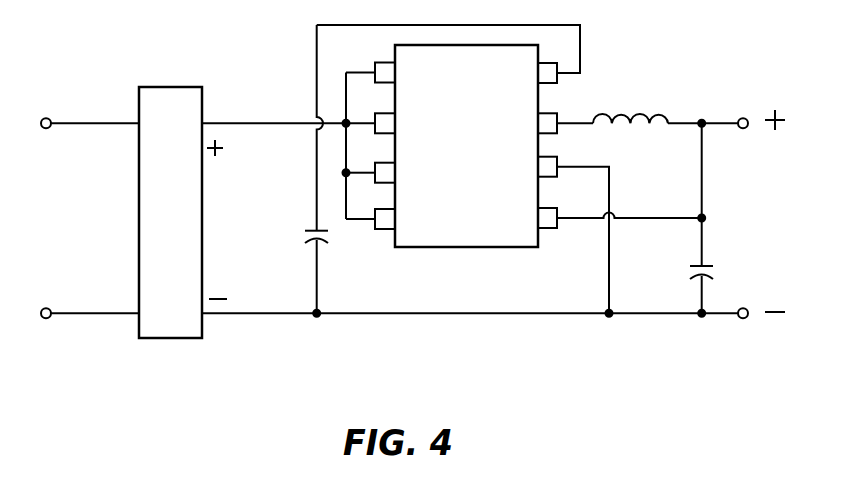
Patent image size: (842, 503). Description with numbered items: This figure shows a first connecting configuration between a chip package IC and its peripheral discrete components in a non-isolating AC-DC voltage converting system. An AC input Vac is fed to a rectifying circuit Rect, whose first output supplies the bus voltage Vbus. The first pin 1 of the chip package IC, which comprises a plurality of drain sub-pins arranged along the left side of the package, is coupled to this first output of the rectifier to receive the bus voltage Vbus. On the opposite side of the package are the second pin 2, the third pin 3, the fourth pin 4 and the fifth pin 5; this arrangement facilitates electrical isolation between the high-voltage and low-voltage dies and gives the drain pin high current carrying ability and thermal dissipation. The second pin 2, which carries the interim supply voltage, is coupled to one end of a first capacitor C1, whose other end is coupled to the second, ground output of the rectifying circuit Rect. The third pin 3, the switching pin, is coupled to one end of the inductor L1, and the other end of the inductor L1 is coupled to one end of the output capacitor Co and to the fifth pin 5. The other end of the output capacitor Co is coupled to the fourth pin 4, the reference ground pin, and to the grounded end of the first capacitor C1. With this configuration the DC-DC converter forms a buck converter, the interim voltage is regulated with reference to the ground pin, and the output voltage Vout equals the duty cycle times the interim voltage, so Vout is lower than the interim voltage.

The first pin DRAIN 1 is at (369, 147).
The second pin VDD 2 is at (547, 73).
The third pin SW 3 is at (547, 123).
The fourth pin GND 4 is at (547, 167).
The fifth pin VO 5 is at (547, 218).
The AC input voltage Vac is at (78, 212).
The rectifier Rect is at (170, 212).
The bus voltage Vbus is at (239, 216).
The first capacitor C1 is at (307, 171).
The chip package IC is at (450, 162).
The inductor L1 is at (647, 103).
The output capacitor Co is at (687, 218).
The output voltage Vout is at (762, 205).